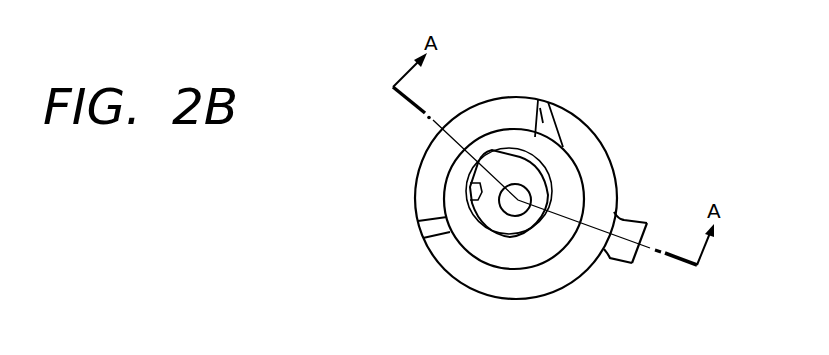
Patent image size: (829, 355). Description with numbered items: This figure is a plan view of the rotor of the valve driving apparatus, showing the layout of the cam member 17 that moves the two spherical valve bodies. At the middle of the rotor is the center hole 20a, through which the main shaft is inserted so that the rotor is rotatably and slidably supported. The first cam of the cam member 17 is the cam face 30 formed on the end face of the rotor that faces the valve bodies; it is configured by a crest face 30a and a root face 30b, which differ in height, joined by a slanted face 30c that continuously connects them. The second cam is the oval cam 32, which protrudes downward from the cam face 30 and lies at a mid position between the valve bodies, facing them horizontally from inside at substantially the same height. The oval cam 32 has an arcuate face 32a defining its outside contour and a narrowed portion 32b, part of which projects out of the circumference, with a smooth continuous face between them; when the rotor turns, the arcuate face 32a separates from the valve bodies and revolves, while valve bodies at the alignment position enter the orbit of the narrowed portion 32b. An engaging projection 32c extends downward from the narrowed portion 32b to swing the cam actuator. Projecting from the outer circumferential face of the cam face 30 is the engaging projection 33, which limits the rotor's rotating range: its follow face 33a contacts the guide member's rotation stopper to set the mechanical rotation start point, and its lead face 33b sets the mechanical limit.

The cam member 17 is at (398, 140).
The center hole 20a is at (500, 224).
The cam face 30 is at (597, 143).
The crest face 30a is at (488, 288).
The root face 30b is at (433, 173).
The slanted face 30c is at (430, 237).
The oval cam 32 is at (551, 161).
The arcuate face 32a is at (557, 197).
The narrowed portion 32b is at (483, 172).
The engaging projection 32c is at (497, 200).
The engaging projection 33 is at (644, 245).
The follow face 33a is at (637, 215).
The lead face 33b is at (610, 257).